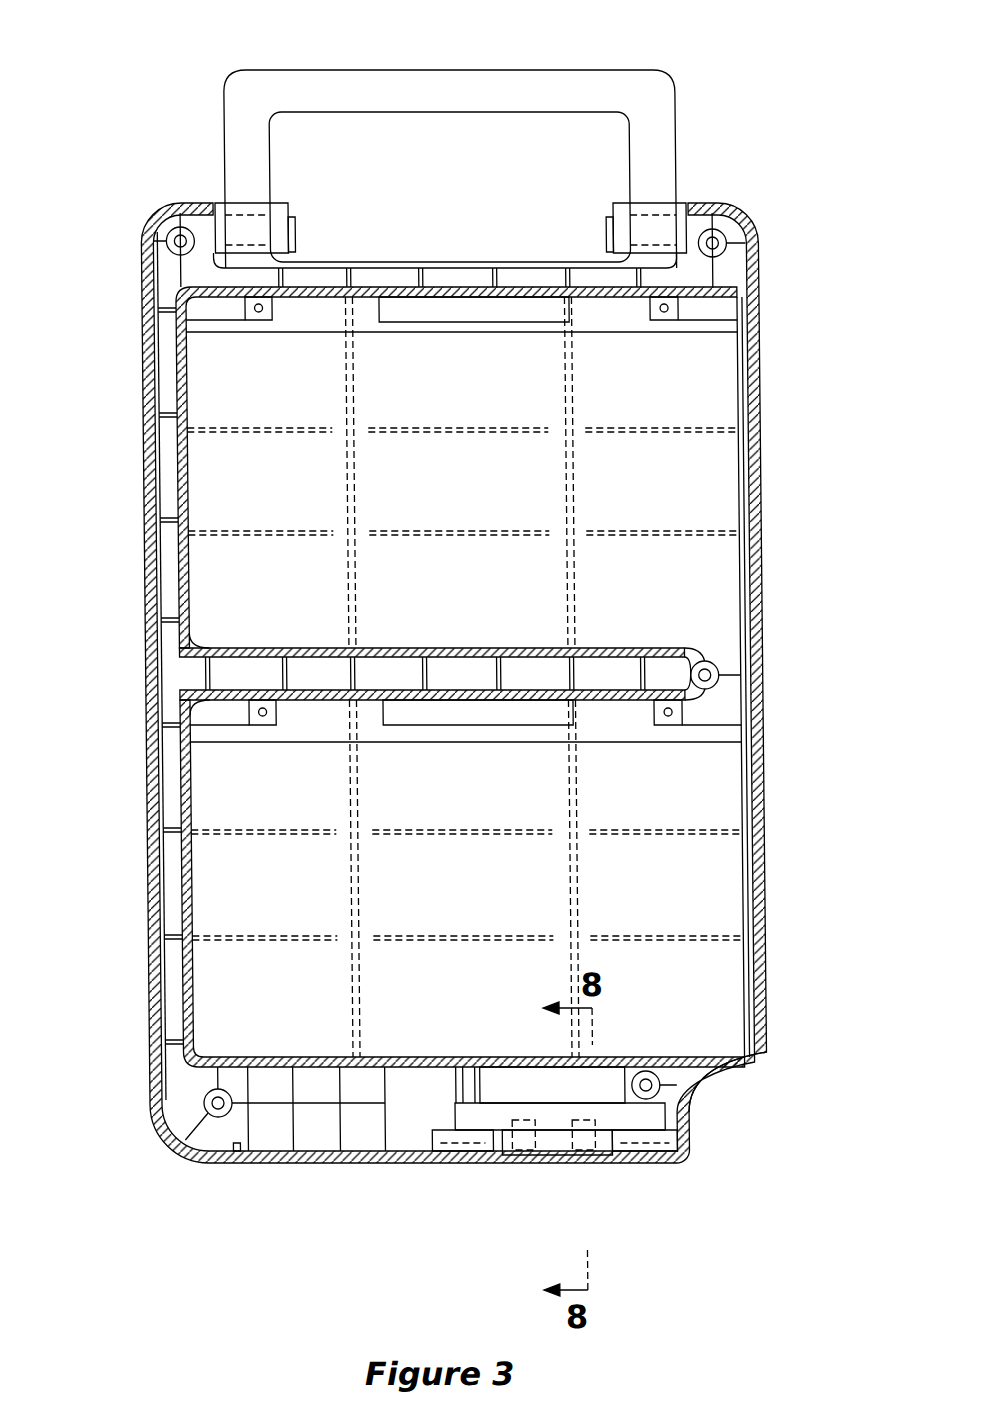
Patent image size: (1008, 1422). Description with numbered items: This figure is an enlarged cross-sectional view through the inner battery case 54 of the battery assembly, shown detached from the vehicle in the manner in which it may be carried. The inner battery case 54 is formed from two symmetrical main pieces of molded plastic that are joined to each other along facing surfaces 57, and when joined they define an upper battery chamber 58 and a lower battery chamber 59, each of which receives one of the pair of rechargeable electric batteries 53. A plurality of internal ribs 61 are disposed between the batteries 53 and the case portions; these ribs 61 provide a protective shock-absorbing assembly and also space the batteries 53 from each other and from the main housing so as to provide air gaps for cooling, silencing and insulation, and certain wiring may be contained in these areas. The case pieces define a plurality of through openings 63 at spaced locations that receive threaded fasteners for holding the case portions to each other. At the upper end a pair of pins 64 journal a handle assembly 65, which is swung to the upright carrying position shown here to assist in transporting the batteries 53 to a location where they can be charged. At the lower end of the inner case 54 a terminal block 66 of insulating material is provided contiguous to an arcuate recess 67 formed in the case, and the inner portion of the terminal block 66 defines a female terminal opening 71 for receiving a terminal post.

The rechargeable electric batteries 53 is at (720, 488).
The inner battery case 54 is at (504, 683).
The facing surfaces 57 is at (755, 557).
The upper battery chamber 58 is at (726, 515).
The lower battery chamber 59 is at (740, 797).
The internal ribs 61 is at (492, 278).
The through openings 63 is at (727, 238).
The pins 64 is at (298, 240).
The handle assembly 65 is at (450, 80).
The terminal block 66 is at (641, 1120).
The arcuate recess 67 is at (712, 1073).
The female terminal opening 71 is at (585, 1135).